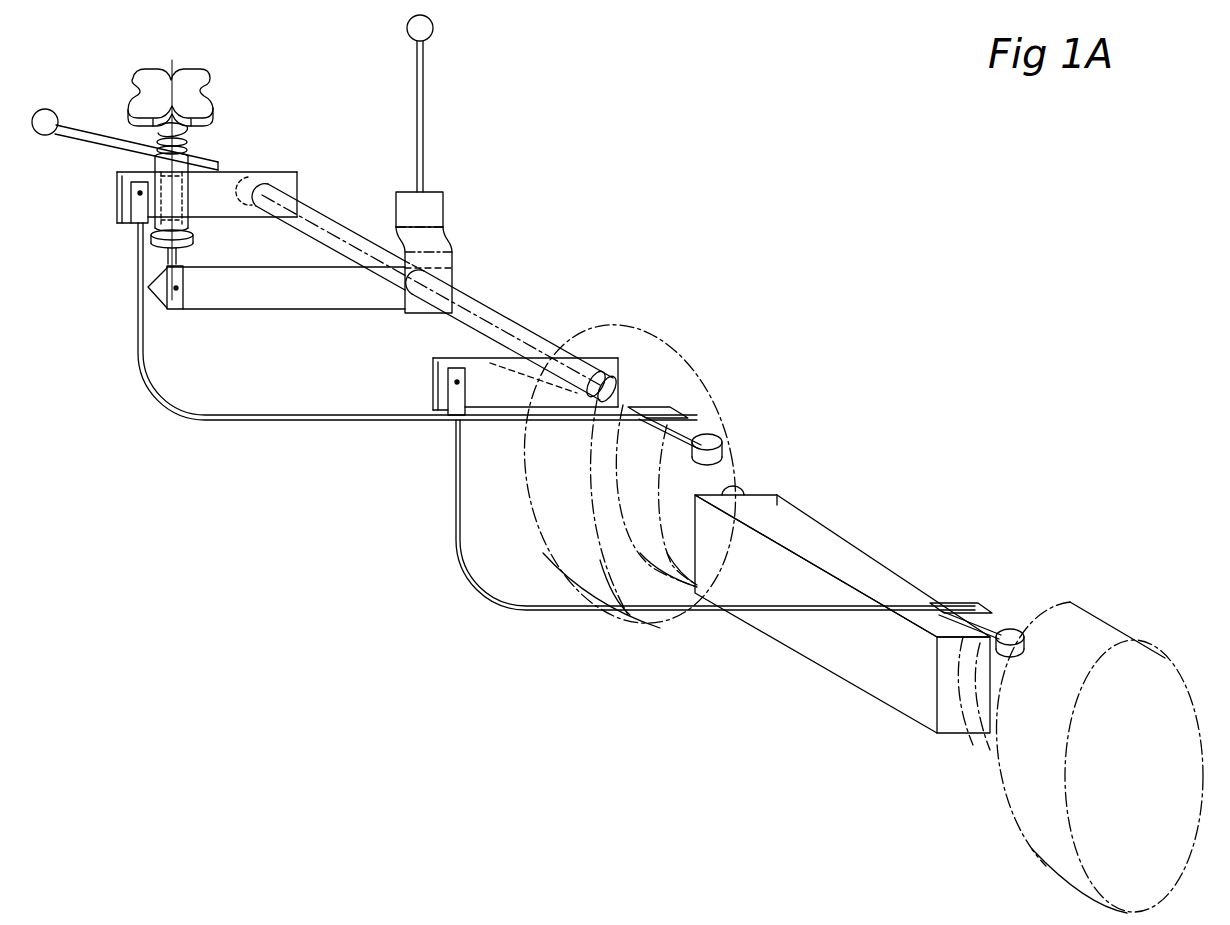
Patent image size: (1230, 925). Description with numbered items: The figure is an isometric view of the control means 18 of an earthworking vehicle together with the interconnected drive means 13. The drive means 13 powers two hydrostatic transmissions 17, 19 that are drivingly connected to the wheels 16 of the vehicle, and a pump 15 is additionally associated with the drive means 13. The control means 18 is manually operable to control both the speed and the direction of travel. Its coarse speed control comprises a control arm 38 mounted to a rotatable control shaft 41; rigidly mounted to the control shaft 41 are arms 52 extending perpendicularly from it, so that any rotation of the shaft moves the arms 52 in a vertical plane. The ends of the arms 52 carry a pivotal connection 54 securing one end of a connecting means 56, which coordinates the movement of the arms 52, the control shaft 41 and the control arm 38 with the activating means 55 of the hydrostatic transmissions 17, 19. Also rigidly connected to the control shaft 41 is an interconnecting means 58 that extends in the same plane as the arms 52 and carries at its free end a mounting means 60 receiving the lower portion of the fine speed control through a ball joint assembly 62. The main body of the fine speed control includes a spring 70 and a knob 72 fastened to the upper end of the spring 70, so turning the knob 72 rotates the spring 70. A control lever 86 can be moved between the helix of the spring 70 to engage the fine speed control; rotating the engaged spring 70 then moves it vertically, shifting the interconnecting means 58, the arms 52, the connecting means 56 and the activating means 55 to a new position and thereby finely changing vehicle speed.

The drive means 13 is at (821, 202).
The pump 15 is at (893, 555).
The wheels 16 is at (655, 352).
The hydrostatic transmission 17 is at (985, 738).
The control means 18 is at (490, 121).
The hydrostatic transmission 19 is at (737, 486).
The control arm 38 is at (425, 155).
The rotatable control shaft 41 is at (313, 213).
The arms 52 is at (232, 208).
The pivotal connection 54 is at (137, 196).
The activating means 55 is at (712, 420).
The connecting means 56 is at (137, 322).
The interconnecting means 58 is at (254, 303).
The mounting means 60 is at (181, 309).
The ball joint assembly 62 is at (186, 257).
The spring 70 is at (192, 138).
The knob 72 is at (213, 86).
The control lever 86 is at (94, 140).